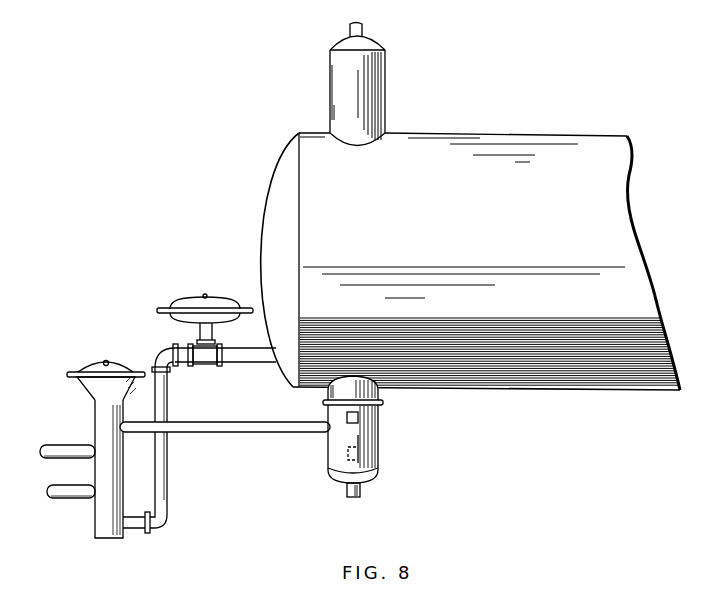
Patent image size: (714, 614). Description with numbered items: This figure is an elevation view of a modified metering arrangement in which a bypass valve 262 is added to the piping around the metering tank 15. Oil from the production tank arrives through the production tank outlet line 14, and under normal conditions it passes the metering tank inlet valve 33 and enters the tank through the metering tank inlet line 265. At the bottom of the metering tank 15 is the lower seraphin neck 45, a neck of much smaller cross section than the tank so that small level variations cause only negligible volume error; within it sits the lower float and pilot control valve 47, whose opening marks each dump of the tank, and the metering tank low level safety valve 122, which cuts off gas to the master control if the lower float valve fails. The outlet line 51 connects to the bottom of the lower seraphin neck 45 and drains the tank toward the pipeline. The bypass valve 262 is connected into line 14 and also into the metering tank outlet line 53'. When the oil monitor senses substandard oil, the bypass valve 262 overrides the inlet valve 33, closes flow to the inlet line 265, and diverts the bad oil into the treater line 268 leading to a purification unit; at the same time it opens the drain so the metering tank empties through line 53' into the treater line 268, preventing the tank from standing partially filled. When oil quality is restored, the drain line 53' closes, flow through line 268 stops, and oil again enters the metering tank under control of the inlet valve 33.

The metering tank 15 is at (268, 193).
The metering tank inlet valve 33 is at (225, 297).
The metering tank outlet line 53' is at (225, 410).
The lower float and pilot control valve 47 is at (380, 420).
The lower seraphin neck 45 is at (380, 441).
The metering tank low level safety valve 122 is at (358, 457).
The metering tank outlet line 51 is at (345, 488).
The metering tank inlet line 265 is at (165, 491).
The treater line 268 is at (70, 452).
The production tank outlet line 14 is at (78, 498).
The bypass valve 262 is at (105, 540).